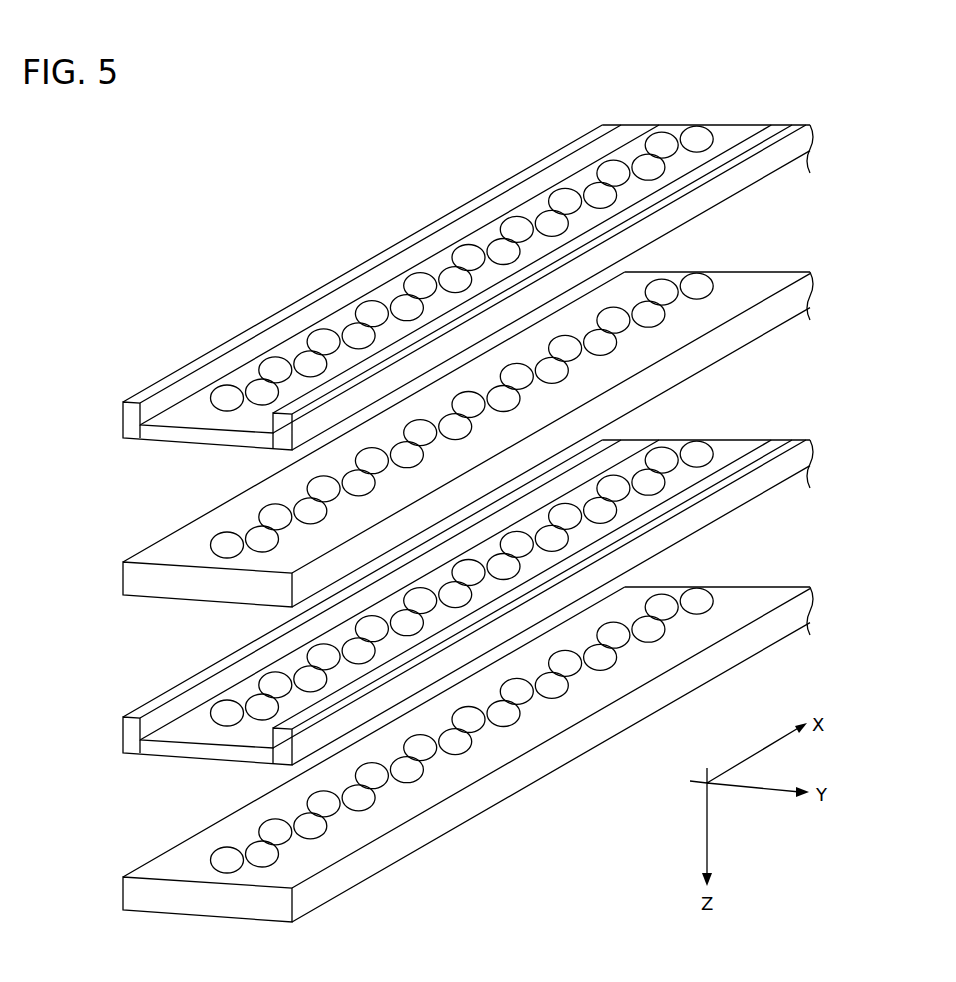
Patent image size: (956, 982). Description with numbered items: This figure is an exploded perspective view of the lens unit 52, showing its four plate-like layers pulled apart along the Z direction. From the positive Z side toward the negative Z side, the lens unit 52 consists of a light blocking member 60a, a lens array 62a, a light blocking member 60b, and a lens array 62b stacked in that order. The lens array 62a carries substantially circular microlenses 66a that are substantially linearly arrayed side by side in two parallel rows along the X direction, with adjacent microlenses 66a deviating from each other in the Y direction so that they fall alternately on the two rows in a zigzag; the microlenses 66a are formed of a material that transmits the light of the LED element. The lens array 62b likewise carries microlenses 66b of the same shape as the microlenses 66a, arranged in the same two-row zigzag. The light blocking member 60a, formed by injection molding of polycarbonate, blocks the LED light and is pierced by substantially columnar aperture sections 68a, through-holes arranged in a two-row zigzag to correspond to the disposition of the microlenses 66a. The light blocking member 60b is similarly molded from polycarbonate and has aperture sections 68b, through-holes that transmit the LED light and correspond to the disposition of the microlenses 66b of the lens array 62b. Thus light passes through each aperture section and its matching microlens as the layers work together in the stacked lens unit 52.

The lens unit 52 is at (175, 196).
The lens array 62b is at (123, 430).
The microlenses 66b is at (699, 137).
The light blocking member 60b is at (123, 576).
The aperture sections 68b is at (700, 284).
The lens array 62a is at (123, 750).
The microlenses 66a is at (699, 452).
The light blocking member 60a is at (123, 896).
The aperture sections 68a is at (700, 599).